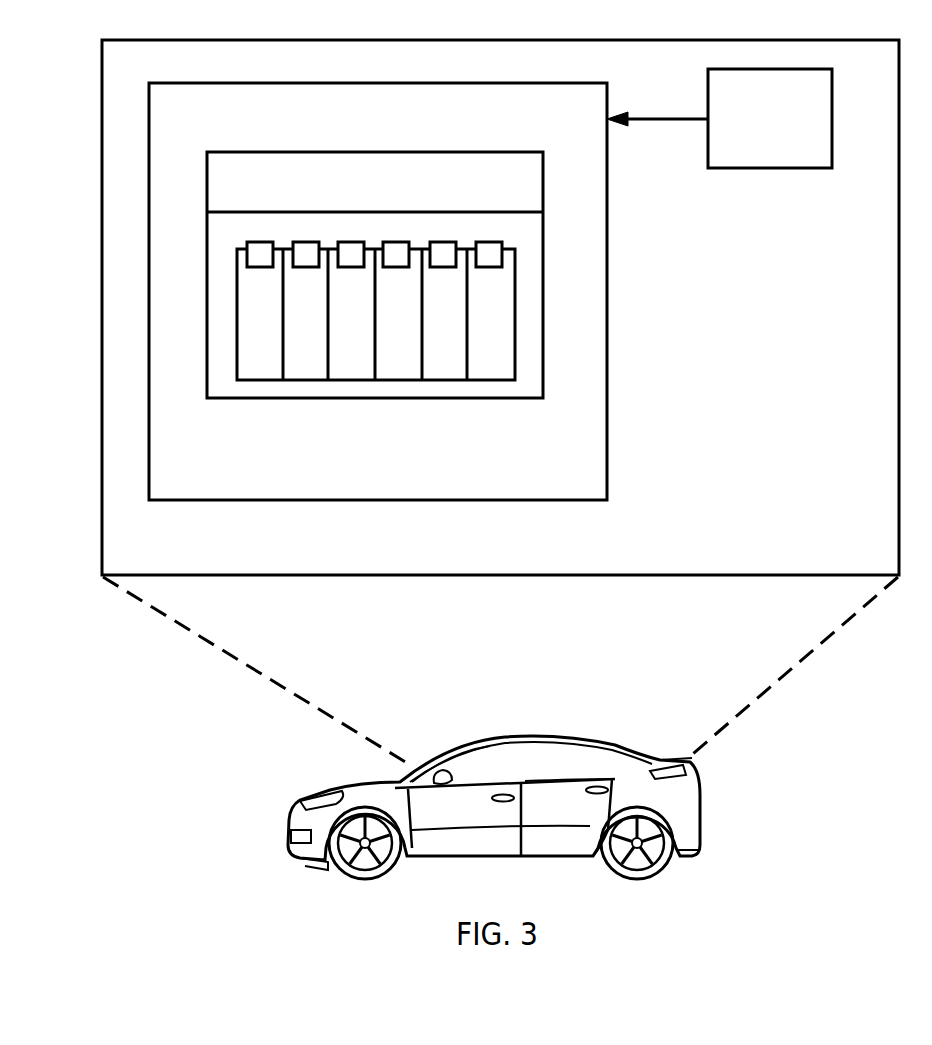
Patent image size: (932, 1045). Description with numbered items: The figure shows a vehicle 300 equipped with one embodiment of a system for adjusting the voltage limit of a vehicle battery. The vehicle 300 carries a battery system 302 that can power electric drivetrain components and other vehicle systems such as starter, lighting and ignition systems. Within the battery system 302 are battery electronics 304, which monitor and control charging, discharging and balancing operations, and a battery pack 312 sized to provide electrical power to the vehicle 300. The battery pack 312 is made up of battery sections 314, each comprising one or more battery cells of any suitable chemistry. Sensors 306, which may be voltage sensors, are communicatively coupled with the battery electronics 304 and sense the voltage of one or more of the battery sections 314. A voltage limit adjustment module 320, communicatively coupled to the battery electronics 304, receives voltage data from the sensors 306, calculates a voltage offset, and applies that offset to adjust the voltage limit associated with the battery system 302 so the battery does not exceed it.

The vehicle 300 is at (385, 778).
The battery system 302 is at (165, 112).
The battery electronics 304 is at (541, 180).
The sensors 306 is at (341, 242).
The battery pack 312 is at (541, 237).
The battery sections 314 is at (347, 362).
The voltage limit adjustment module 320 is at (756, 129).